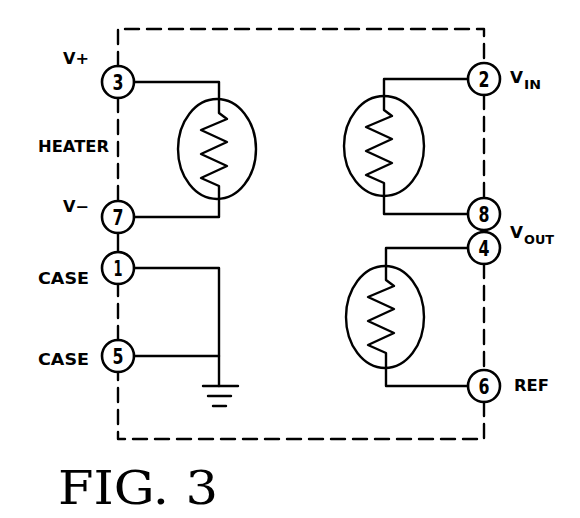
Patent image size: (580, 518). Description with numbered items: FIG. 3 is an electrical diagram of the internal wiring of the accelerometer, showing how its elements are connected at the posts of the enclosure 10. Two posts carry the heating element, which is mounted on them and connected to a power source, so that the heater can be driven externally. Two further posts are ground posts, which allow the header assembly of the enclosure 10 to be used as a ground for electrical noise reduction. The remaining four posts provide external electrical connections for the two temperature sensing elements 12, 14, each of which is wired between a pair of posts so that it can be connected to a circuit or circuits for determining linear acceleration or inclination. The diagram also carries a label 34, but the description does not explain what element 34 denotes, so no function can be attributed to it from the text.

The enclosure 10 is at (243, 120).
The temperature sensing element 14 is at (358, 115).
The temperature sensing element 12 is at (355, 330).
The circuit (next figure) 34 is at (257, 517).